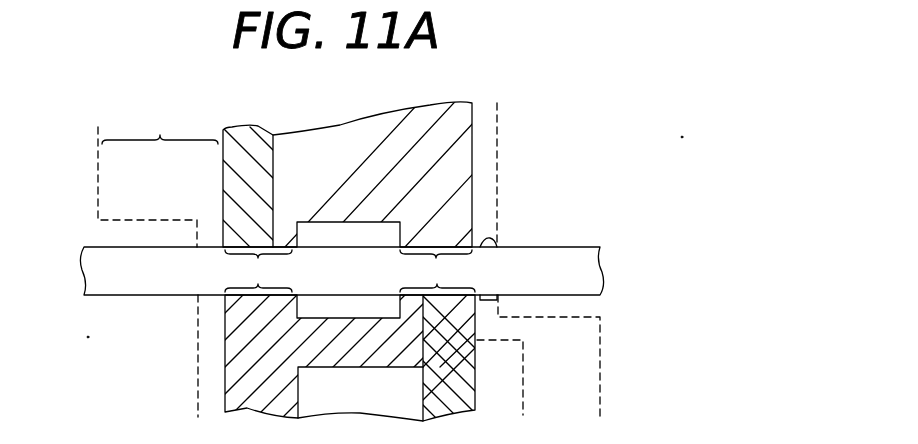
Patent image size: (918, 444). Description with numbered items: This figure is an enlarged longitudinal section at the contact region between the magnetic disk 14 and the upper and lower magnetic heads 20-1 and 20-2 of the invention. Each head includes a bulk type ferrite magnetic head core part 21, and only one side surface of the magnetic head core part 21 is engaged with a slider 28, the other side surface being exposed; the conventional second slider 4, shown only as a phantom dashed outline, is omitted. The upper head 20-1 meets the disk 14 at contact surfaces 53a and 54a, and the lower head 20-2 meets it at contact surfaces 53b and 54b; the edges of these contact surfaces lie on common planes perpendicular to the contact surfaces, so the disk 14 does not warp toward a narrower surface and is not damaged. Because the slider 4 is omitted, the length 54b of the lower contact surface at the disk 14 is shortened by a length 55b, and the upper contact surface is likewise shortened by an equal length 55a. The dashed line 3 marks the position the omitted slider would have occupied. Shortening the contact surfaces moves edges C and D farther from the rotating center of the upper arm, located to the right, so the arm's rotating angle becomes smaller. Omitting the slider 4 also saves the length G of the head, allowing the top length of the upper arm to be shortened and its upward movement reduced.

The magnetic disk 14 is at (590, 246).
The magnetic head core part 21 is at (222, 179).
The slider 28 is at (467, 193).
The upper magnetic head 20-1 is at (476, 136).
The lower magnetic head 20-2 is at (479, 408).
The boundary line 3 is at (497, 158).
The slider 4 is at (95, 193).
The length of the magnetic head G is at (160, 133).
The contact surface 53a is at (256, 258).
The contact surface 53b is at (262, 283).
The contact surface 54a is at (436, 259).
The contact surface 54b is at (439, 284).
The length 55a is at (491, 231).
The length 55b is at (486, 301).
The edge C is at (462, 236).
The edge D is at (422, 368).